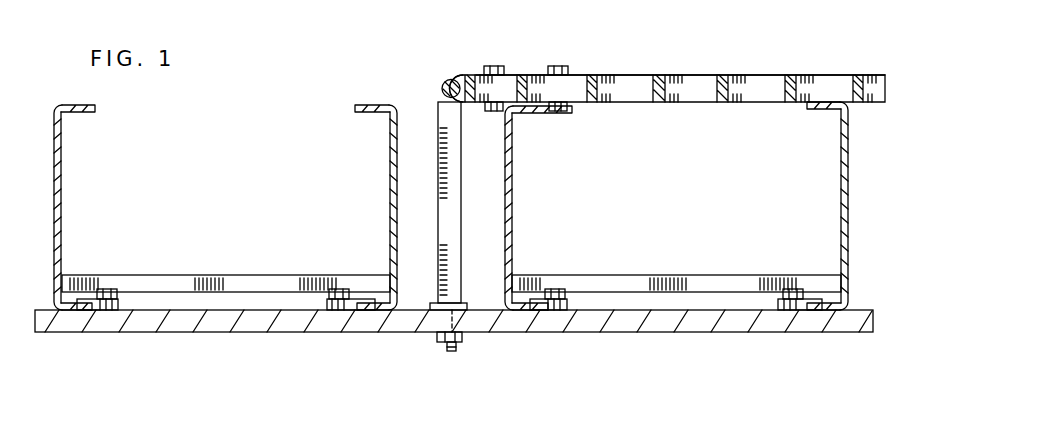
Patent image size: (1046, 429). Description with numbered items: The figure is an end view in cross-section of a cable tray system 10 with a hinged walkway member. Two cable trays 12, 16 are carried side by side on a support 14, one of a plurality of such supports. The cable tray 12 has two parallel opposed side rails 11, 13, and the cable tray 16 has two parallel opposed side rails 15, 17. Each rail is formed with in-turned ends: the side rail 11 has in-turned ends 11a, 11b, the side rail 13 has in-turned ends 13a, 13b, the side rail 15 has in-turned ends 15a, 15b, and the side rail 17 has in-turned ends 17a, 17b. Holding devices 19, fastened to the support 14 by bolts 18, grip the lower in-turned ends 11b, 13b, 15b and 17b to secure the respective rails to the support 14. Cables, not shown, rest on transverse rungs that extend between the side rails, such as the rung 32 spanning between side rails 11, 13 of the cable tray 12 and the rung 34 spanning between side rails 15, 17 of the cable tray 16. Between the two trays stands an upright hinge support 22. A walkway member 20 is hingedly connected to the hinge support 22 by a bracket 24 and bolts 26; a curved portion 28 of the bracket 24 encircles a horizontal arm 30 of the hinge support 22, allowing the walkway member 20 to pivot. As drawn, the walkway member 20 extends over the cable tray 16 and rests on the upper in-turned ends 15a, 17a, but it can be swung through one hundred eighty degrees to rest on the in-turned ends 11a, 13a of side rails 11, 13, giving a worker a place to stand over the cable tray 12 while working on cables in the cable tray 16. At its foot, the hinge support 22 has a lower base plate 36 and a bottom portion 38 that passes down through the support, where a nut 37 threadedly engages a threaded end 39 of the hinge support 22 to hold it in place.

The cable tray system 10 is at (228, 333).
The side rail 11 is at (62, 212).
The in-turned end 11a is at (90, 112).
The in-turned end 11b is at (82, 312).
The cable tray 12 is at (54, 200).
The side rail 13 is at (388, 212).
The in-turned end 13a is at (369, 104).
The in-turned end 13b is at (362, 312).
The support 14 is at (612, 333).
The side rail 15 is at (514, 220).
The in-turned end 15a is at (524, 113).
The in-turned end 15b is at (535, 312).
The cable tray 16 is at (850, 165).
The side rail 17 is at (841, 188).
The in-turned end 17a is at (812, 109).
The in-turned end 17b is at (815, 312).
The bolt 18 is at (107, 290).
The holding device 19 is at (112, 292).
The walkway member 20 is at (713, 75).
The hinge support 22 is at (472, 166).
The bracket 24 is at (526, 74).
The bolt 26 is at (495, 66).
The curved portion 28 is at (443, 97).
The horizontal arm 30 is at (440, 76).
The rung 32 is at (225, 277).
The rung 34 is at (690, 277).
The lower base plate 36 is at (466, 303).
The nut 37 is at (458, 345).
The bottom portion 38 is at (440, 333).
The threaded end 39 is at (448, 352).